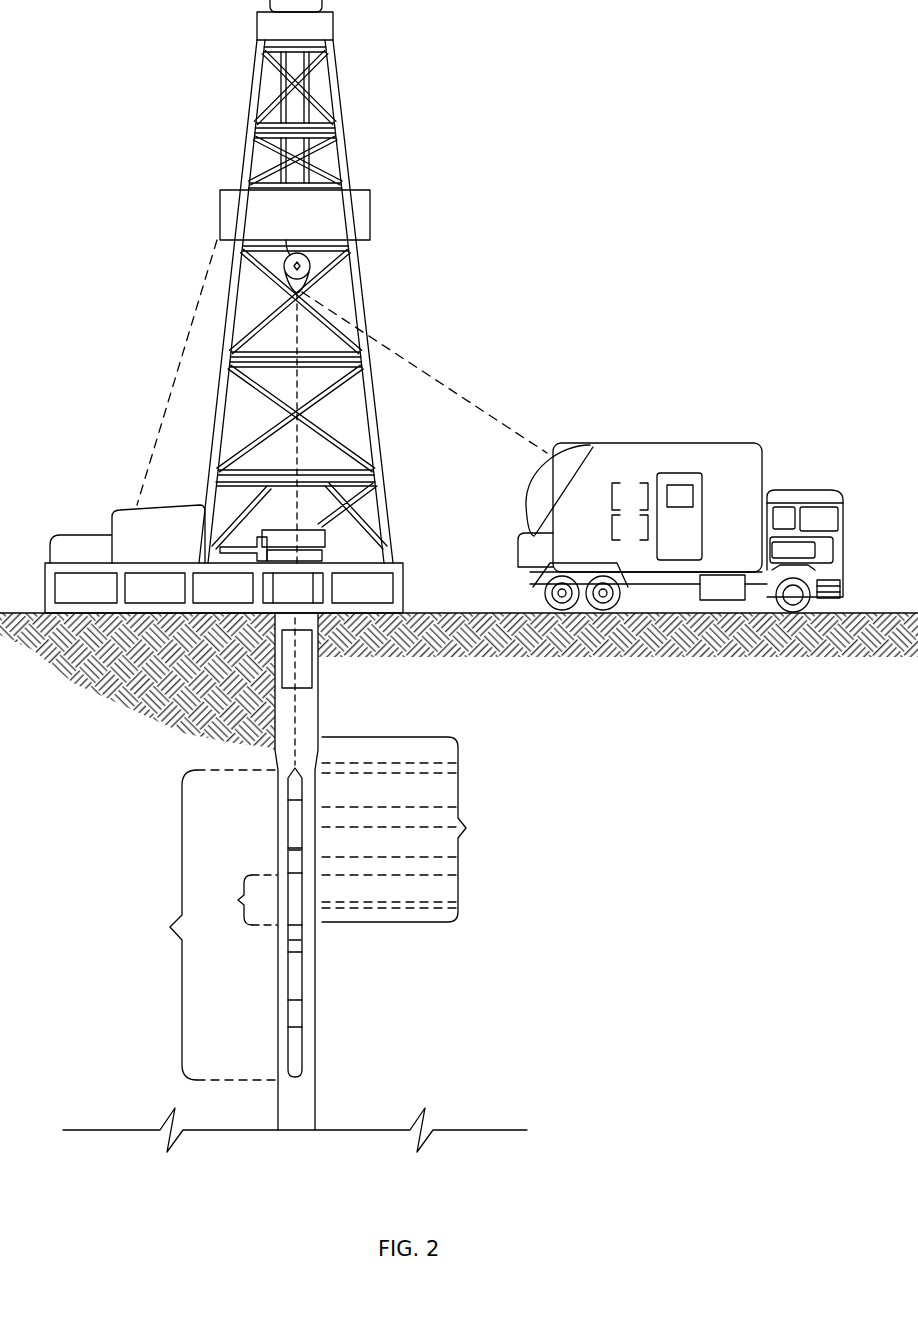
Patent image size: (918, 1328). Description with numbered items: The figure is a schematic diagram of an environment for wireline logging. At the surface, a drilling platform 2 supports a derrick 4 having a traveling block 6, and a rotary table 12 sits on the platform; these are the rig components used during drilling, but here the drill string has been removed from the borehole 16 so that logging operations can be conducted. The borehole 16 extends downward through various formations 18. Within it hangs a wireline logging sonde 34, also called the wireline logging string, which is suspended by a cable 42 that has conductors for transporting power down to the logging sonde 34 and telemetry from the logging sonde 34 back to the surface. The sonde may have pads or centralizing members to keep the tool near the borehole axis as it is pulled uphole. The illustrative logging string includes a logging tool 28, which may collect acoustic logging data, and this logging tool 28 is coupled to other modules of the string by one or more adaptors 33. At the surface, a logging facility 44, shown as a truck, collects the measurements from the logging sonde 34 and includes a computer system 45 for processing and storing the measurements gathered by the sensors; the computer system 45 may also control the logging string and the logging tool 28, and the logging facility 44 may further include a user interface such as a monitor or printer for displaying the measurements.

The drilling platform 2 is at (403, 590).
The derrick 4 is at (367, 292).
The traveling block 6 is at (284, 258).
The rotary table 12 is at (322, 527).
The borehole 16 is at (277, 788).
The formations 18 is at (416, 829).
The logging tool 28 is at (243, 900).
The adaptors 33 is at (295, 863).
The wireline logging sonde 34 is at (206, 925).
The cable 42 is at (418, 362).
The logging facility 44 is at (677, 444).
The computer system 45 is at (645, 483).